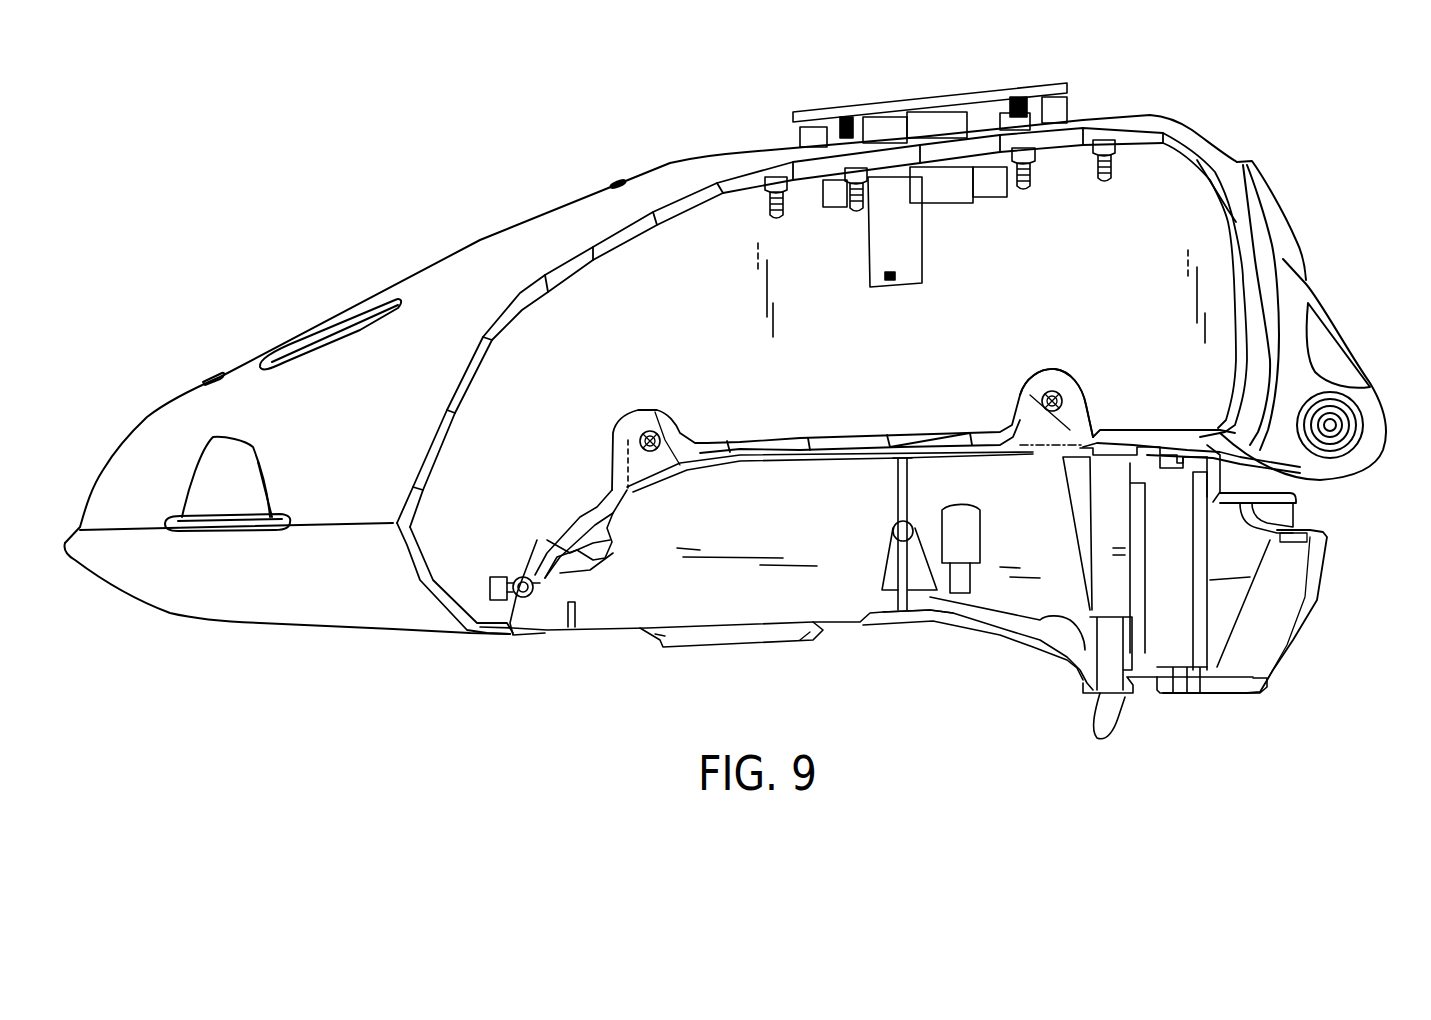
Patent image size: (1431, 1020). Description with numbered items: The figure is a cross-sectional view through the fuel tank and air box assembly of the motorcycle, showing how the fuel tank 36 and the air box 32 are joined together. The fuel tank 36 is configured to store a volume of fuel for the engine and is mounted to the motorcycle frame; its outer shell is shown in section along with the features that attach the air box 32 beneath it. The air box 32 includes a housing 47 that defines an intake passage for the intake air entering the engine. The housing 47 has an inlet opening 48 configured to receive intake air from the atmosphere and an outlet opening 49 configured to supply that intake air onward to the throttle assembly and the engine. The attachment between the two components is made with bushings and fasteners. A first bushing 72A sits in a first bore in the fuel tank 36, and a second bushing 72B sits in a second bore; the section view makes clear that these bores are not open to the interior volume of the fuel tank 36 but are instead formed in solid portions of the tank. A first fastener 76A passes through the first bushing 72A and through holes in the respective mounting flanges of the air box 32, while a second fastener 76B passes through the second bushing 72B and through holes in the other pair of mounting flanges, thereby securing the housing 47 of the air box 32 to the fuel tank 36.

The fuel tank 36 is at (568, 260).
The first bushing 72A is at (658, 407).
The second bushing 72B is at (1040, 383).
The first fastener 76A is at (640, 427).
The second fastener 76B is at (1060, 396).
The air box 32 is at (1337, 527).
The housing 47 is at (938, 618).
The inlet opening 48 is at (1243, 622).
The outlet opening 49 is at (800, 637).